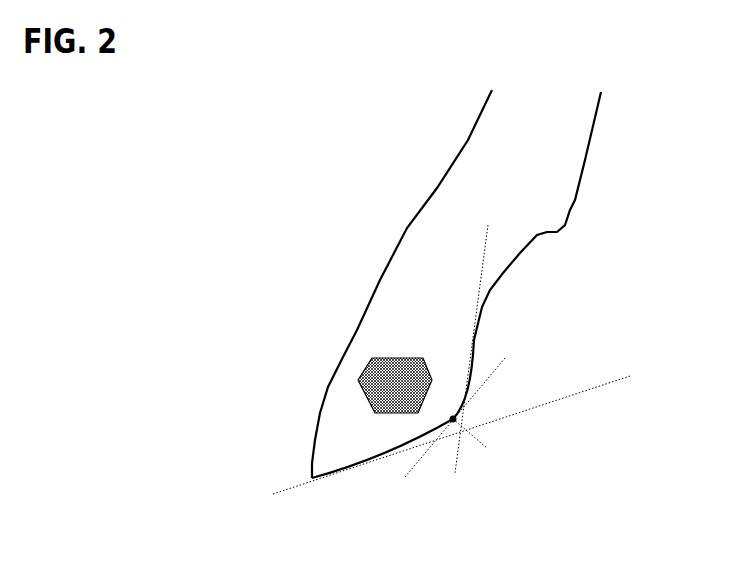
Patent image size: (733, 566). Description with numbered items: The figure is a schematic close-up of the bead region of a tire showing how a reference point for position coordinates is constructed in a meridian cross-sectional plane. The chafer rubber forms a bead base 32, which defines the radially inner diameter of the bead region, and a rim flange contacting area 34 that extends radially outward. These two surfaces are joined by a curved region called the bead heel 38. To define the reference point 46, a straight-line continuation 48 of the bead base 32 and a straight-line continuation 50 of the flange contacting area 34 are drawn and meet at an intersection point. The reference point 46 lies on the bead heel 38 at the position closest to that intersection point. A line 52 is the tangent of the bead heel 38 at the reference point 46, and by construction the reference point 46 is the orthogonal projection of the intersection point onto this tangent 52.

The bead base 32 is at (372, 465).
The rim flange contacting area 34 is at (475, 343).
The bead heel 38 is at (476, 414).
The reference point 46 is at (455, 433).
The straight-line continuation of the flange contacting area 50 is at (459, 440).
The straight-line continuation of the bead base 48 is at (548, 403).
The tangent 52 is at (490, 378).